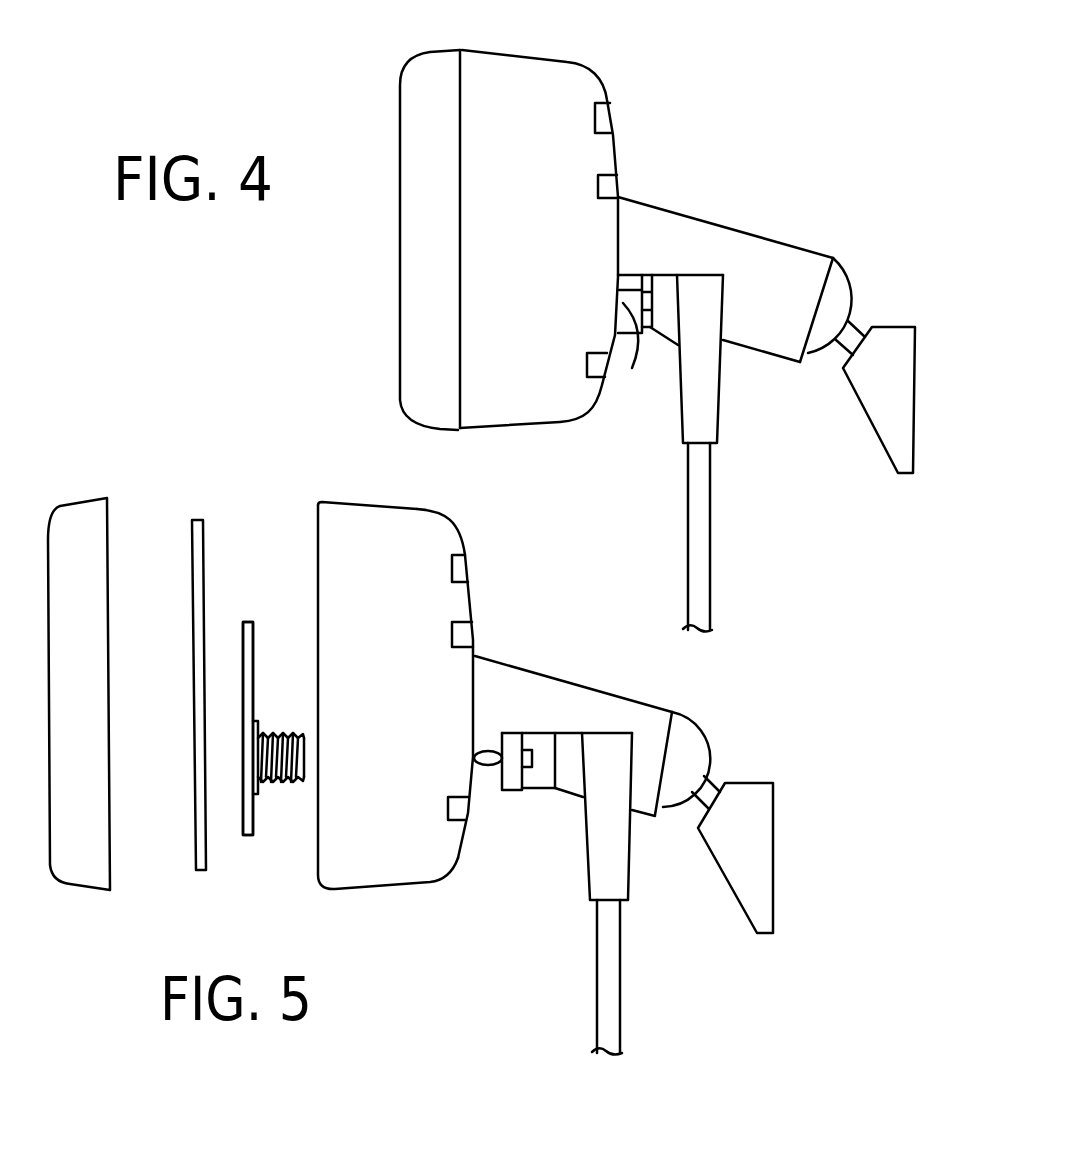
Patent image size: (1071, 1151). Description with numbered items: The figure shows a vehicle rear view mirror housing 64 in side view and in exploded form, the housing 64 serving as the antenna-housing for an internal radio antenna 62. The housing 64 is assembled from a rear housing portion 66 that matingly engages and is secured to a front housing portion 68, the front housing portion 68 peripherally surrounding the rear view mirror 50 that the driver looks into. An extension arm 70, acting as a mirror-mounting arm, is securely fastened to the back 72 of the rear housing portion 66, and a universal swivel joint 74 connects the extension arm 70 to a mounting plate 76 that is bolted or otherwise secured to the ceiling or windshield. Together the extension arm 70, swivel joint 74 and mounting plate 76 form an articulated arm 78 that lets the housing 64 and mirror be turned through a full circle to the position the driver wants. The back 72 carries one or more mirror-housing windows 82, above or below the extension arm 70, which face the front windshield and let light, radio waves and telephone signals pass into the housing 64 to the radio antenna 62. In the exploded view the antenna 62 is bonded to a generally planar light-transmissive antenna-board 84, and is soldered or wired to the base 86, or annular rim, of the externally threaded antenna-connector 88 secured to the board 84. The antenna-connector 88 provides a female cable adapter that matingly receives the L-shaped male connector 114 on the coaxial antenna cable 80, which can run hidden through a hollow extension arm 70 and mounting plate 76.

In FIG. 5, the rear view mirror 50 is at (195, 849).
In FIG. 5, the radio antenna 62 is at (243, 813).
In FIG. 4, the rear view mirror housing 64 is at (463, 48).
In FIG. 5, the rear view mirror housing 64 is at (318, 500).
In FIG. 4, the rear housing portion 66 is at (568, 62).
In FIG. 5, the rear housing portion 66 is at (416, 509).
In FIG. 4, the front housing portion 68 is at (405, 84).
In FIG. 5, the front housing portion 68 is at (48, 540).
In FIG. 4, the extension arm 70 is at (752, 237).
In FIG. 5, the extension arm 70 is at (549, 673).
In FIG. 4, the back of the rear housing portion 72 is at (612, 160).
In FIG. 5, the back of the rear housing portion 72 is at (473, 607).
In FIG. 4, the universal swivel joint 74 is at (850, 321).
In FIG. 5, the universal swivel joint 74 is at (707, 780).
In FIG. 4, the mounting plate 76 is at (877, 420).
In FIG. 5, the mounting plate 76 is at (775, 847).
In FIG. 4, the articulated arm 78 is at (831, 257).
In FIG. 5, the articulated arm 78 is at (703, 738).
In FIG. 4, the antenna cable 80 is at (707, 566).
In FIG. 5, the antenna cable 80 is at (620, 1015).
In FIG. 4, the mirror-housing window 82 is at (607, 97).
In FIG. 5, the mirror-housing window 82 is at (464, 548).
In FIG. 5, the antenna-board 84 is at (246, 621).
In FIG. 5, the base 86 is at (257, 721).
In FIG. 5, the antenna-connector 88 is at (280, 787).
In FIG. 4, the L-shaped male connector 114 is at (632, 368).
In FIG. 5, the L-shaped male connector 114 is at (495, 767).